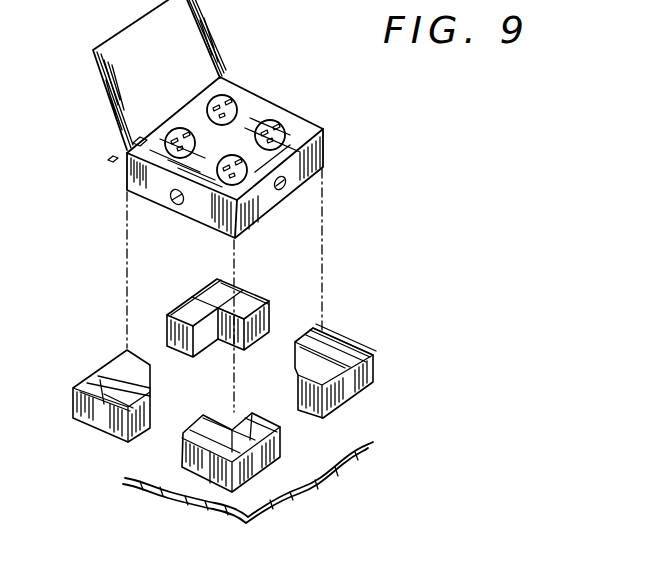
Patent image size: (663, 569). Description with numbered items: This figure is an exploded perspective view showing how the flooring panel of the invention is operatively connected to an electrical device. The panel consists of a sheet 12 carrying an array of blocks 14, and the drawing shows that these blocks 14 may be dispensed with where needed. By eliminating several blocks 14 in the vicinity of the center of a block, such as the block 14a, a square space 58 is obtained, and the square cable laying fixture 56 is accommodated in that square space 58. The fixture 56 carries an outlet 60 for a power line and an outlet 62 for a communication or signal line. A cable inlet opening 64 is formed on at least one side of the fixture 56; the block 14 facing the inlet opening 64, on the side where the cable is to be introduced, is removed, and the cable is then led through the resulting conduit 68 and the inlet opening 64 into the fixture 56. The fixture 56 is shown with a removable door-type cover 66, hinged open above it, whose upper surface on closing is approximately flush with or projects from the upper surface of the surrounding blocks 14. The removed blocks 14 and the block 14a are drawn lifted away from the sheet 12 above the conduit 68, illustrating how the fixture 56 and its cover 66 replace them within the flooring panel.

The sheet 12 is at (177, 497).
The block 14 is at (342, 402).
The block 14a is at (368, 332).
The cable laying fixture 56 is at (268, 113).
The square space 58 is at (263, 373).
The outlet 60 is at (233, 98).
The outlet 62 is at (284, 129).
The cable inlet opening 64 is at (282, 191).
The door-type cover 66 is at (102, 89).
The conduit 68 is at (157, 332).